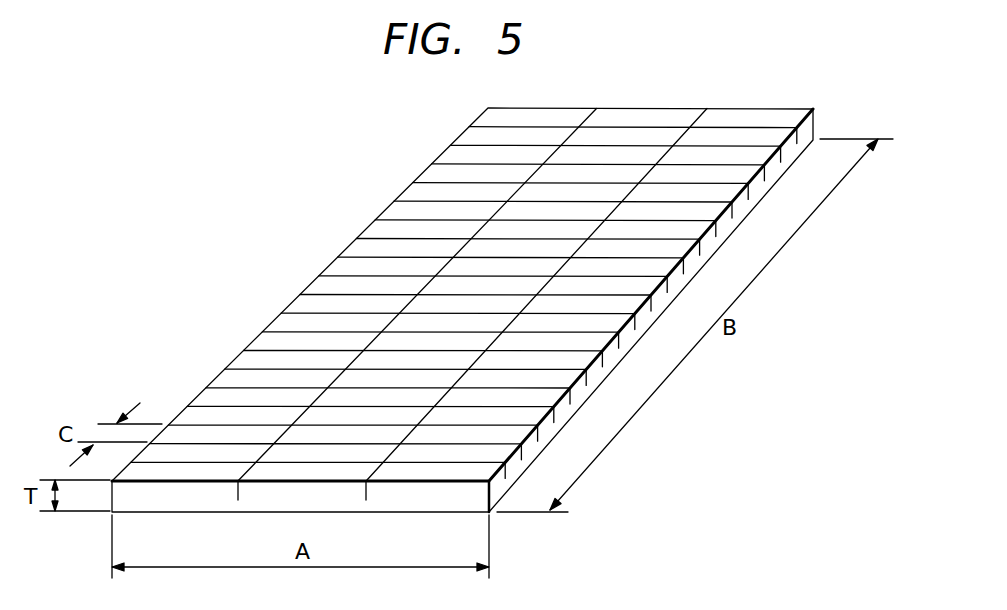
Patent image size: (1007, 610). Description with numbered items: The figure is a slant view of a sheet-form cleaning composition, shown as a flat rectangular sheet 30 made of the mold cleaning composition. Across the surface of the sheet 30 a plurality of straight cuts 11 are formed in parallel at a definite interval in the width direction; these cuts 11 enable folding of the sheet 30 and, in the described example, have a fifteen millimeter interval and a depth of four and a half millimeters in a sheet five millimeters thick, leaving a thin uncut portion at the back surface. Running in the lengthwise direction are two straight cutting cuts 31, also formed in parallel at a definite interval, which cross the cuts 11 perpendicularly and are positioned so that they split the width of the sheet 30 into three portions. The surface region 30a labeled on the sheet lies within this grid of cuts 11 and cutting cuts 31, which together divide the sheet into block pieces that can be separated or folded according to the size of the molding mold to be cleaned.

The sheet 30 is at (337, 226).
The surface strips 30a is at (315, 285).
The straight cuts 11 is at (463, 142).
The straight cutting cuts 31 is at (680, 140).